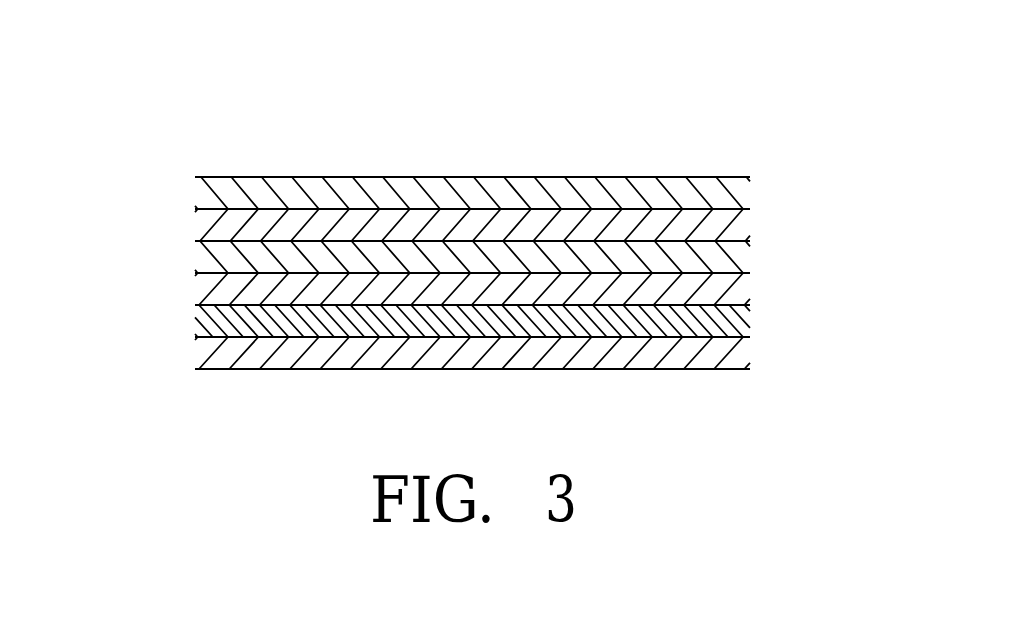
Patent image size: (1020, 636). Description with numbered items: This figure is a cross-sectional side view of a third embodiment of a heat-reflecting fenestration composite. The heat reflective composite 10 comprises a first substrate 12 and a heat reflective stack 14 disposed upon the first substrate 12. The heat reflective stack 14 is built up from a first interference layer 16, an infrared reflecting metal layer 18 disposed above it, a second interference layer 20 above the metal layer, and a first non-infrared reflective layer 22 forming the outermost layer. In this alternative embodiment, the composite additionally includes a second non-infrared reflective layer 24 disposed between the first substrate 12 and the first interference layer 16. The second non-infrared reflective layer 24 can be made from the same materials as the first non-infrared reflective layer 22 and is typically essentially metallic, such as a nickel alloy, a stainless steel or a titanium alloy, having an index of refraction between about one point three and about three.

The heat reflective composite 10 is at (506, 137).
The first substrate 12 is at (720, 352).
The heat reflective stack 14 is at (175, 337).
The first interference layer 16 is at (730, 292).
The infrared reflecting metal layer 18 is at (727, 258).
The second interference layer 20 is at (732, 227).
The first non-infrared reflective layer 22 is at (717, 192).
The second non-infrared reflective layer 24 is at (738, 320).